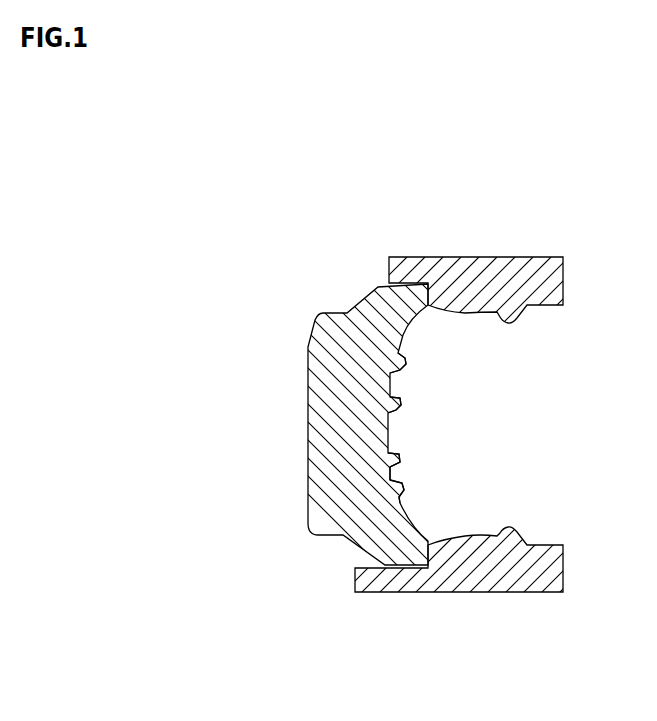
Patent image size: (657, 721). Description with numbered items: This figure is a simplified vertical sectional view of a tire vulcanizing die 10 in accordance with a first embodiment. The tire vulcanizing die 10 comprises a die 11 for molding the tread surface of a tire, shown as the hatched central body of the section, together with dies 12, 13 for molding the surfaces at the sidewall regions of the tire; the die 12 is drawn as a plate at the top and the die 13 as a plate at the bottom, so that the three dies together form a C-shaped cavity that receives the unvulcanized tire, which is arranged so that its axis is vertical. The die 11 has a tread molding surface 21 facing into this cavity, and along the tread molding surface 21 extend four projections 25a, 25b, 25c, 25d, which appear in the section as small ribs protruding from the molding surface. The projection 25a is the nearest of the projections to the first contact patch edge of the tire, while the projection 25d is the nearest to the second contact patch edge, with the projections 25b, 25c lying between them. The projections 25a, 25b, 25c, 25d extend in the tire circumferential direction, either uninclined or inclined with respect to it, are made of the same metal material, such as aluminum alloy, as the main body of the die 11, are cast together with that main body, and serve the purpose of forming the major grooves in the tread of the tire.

The tire vulcanizing die 10 is at (296, 284).
The die 11 is at (308, 424).
The die 12 is at (473, 257).
The die 13 is at (482, 592).
The tread molding surface 21 is at (390, 467).
The projection 25a is at (406, 362).
The projection 25b is at (401, 405).
The projection 25c is at (398, 445).
The projection 25d is at (400, 488).